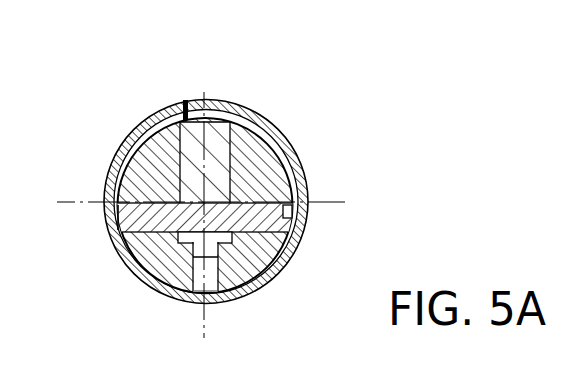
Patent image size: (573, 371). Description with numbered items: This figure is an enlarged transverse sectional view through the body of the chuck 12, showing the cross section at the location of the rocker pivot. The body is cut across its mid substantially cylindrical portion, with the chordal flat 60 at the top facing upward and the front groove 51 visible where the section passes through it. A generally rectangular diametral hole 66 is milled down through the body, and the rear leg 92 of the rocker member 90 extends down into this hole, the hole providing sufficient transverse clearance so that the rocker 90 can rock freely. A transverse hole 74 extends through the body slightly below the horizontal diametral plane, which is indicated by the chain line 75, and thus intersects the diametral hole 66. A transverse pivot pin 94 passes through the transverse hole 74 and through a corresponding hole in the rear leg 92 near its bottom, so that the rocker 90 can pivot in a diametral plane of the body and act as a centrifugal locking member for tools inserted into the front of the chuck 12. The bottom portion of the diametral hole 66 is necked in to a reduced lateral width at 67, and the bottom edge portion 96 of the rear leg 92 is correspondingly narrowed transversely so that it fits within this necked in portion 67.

The chuck 12 is at (112, 68).
The rocker member 90 is at (187, 100).
The diametral hole 66 is at (214, 122).
The rear leg 92 is at (227, 148).
The chordal flat 60 is at (263, 155).
The horizontal diametral plane 75 is at (326, 201).
The transverse hole 74 is at (292, 227).
The bottom edge portion 96 is at (265, 248).
The transverse pivot pin 94 is at (116, 223).
The front groove 51 is at (195, 295).
The necked in portion 67 is at (209, 295).